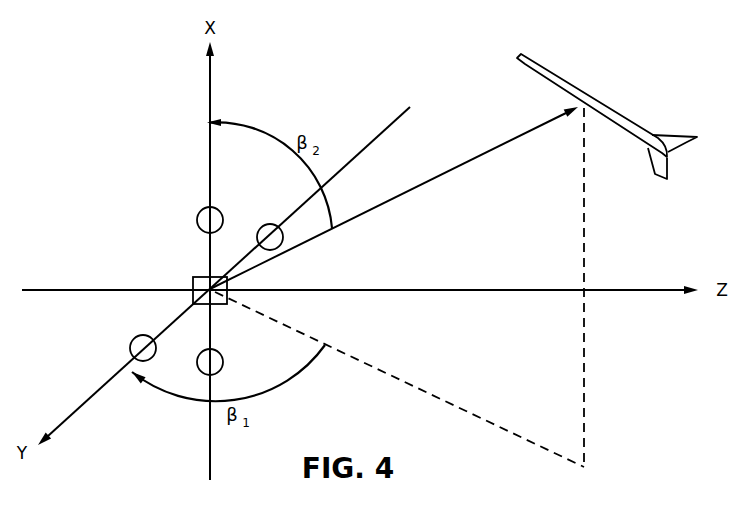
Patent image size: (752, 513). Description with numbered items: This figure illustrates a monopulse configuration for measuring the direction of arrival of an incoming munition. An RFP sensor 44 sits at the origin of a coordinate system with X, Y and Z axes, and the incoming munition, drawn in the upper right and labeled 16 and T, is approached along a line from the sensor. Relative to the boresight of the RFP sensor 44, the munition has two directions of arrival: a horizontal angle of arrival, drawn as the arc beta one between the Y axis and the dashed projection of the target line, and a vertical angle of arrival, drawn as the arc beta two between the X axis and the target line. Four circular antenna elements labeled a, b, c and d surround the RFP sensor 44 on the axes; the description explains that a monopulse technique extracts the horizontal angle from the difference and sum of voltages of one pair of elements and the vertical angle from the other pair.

The RFP sensor 44 is at (193, 279).
The target 16 is at (558, 70).
The sensor a is at (271, 225).
The sensor b is at (215, 354).
The sensor c is at (137, 342).
The sensor d is at (200, 213).